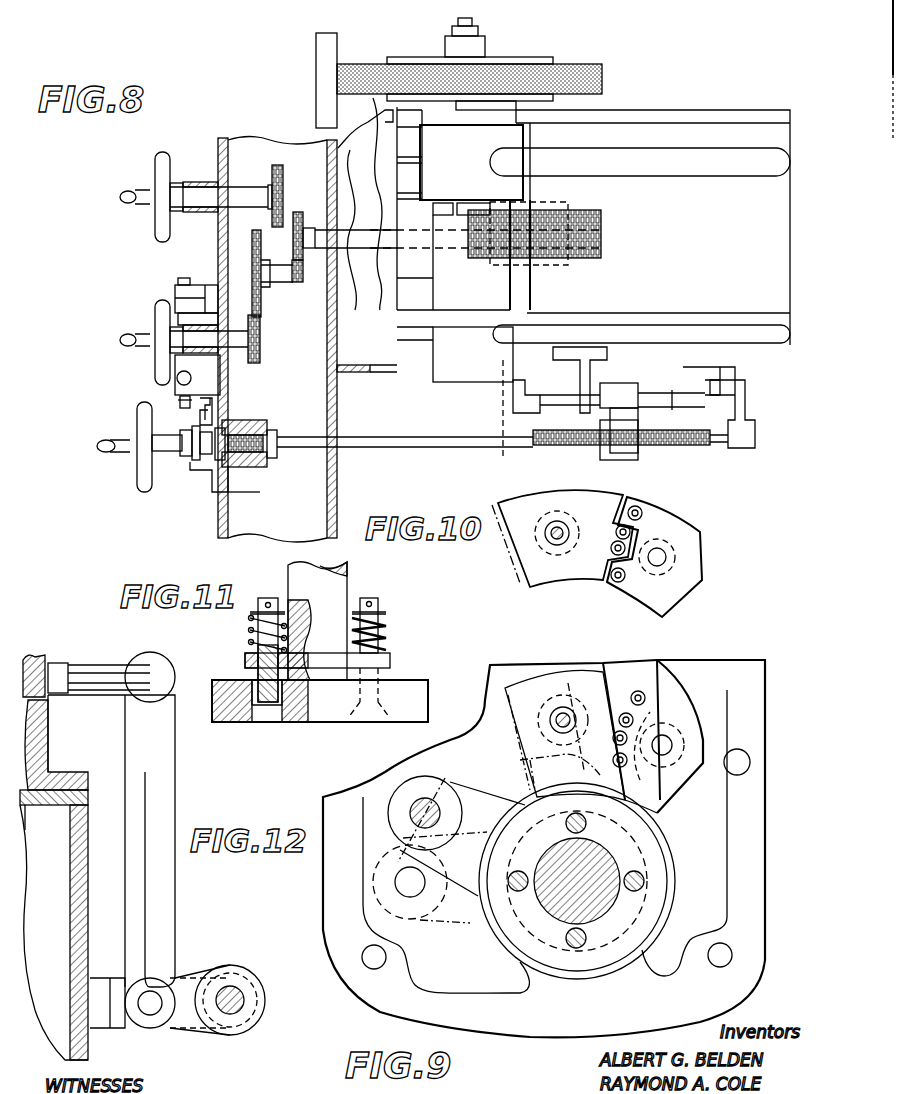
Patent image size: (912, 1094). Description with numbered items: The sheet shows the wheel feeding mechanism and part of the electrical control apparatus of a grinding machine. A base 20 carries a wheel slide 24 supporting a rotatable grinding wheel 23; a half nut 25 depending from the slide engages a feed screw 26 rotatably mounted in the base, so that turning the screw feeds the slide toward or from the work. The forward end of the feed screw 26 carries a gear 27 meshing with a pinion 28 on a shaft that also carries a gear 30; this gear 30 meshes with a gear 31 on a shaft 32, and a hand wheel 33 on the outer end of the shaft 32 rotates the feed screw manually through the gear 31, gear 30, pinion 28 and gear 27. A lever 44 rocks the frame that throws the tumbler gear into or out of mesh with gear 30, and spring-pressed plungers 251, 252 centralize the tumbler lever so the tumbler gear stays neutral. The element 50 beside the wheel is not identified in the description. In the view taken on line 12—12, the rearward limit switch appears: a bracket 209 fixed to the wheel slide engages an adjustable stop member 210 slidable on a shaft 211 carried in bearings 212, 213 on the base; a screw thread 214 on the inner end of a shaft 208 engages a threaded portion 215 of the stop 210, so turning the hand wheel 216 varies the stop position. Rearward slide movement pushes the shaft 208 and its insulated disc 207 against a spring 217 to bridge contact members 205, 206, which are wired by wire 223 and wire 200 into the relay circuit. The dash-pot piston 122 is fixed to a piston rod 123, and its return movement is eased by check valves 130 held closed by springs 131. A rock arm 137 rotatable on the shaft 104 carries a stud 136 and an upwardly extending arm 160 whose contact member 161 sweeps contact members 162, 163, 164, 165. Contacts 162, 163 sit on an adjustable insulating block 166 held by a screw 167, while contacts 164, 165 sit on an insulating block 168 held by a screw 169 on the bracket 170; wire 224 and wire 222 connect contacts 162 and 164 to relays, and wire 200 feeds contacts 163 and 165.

In FIG. 8, the section line 12 is at (496, 368).
In FIG. 8, the base 20 is at (220, 145).
In FIG. 12, the base 20 is at (85, 1055).
In FIG. 8, the grinding wheel 23 is at (360, 70).
In FIG. 8, the wheel slide 24 is at (752, 128).
In FIG. 12, the wheel slide 24 is at (42, 660).
In FIG. 8, the half nut 25 is at (568, 262).
In FIG. 8, the feed screw 26 is at (600, 240).
In FIG. 8, the gear 27 is at (300, 212).
In FIG. 8, the pinion 28 is at (298, 283).
In FIG. 8, the gear 30 is at (262, 245).
In FIG. 8, the gear 31 is at (260, 342).
In FIG. 8, the shaft 32 is at (235, 333).
In FIG. 8, the hand wheel 33 is at (162, 310).
In FIG. 8, the lever 44 is at (178, 375).
In FIG. 8, the plate 50 is at (318, 47).
In FIG. 9, the shaft 104 is at (600, 895).
In FIG. 11, the dash-pot piston 122 is at (406, 680).
In FIG. 11, the piston rod 123 is at (340, 588).
In FIG. 11, the check valves 130 is at (262, 722).
In FIG. 11, the springs 131 is at (252, 630).
In FIG. 9, the stud 136 is at (412, 820).
In FIG. 9, the rock arm 137 is at (474, 795).
In FIG. 9, the upwardly extending arm 160 is at (614, 690).
In FIG. 9, the contact member 161 is at (530, 766).
In FIG. 10, the contact member 162 is at (640, 506).
In FIG. 9, the contact member 162 is at (644, 694).
In FIG. 10, the contact member 163 is at (618, 583).
In FIG. 9, the contact member 163 is at (618, 768).
In FIG. 10, the contact member 164 is at (616, 532).
In FIG. 9, the contact member 164 is at (619, 720).
In FIG. 10, the contact member 165 is at (611, 549).
In FIG. 9, the contact member 165 is at (613, 740).
In FIG. 10, the adjustable insulating block 166 is at (650, 600).
In FIG. 9, the adjustable insulating block 166 is at (668, 785).
In FIG. 10, the screw 167 is at (660, 566).
In FIG. 9, the screw 167 is at (672, 755).
In FIG. 10, the adjustable insulating block 168 is at (520, 502).
In FIG. 9, the adjustable insulating block 168 is at (520, 718).
In FIG. 10, the screw 169 is at (562, 526).
In FIG. 9, the screw 169 is at (556, 712).
In FIG. 9, the bracket 170 is at (492, 708).
In FIG. 8, the wire 200 is at (240, 400).
In FIG. 10, the wire 200 is at (625, 548).
In FIG. 9, the wire 200 is at (627, 738).
In FIG. 8, the contact member 205 is at (202, 470).
In FIG. 8, the contact member 206 is at (206, 420).
In FIG. 8, the disc 207 is at (190, 458).
In FIG. 8, the shaft 208 is at (315, 447).
In FIG. 8, the bracket 209 is at (590, 352).
In FIG. 12, the bracket 209 is at (100, 668).
In FIG. 8, the adjustable stop member 210 is at (612, 390).
In FIG. 12, the adjustable stop member 210 is at (132, 748).
In FIG. 8, the shaft 211 is at (671, 407).
In FIG. 12, the shaft 211 is at (150, 990).
In FIG. 8, the bearing 212 is at (518, 408).
In FIG. 12, the bearing 212 is at (133, 998).
In FIG. 8, the bearing 213 is at (738, 388).
In FIG. 12, the bearing 213 is at (193, 975).
In FIG. 8, the screw thread 214 is at (560, 445).
In FIG. 12, the screw thread 214 is at (243, 992).
In FIG. 8, the threaded portion 215 is at (630, 448).
In FIG. 12, the threaded portion 215 is at (240, 972).
In FIG. 8, the hand wheel 216 is at (142, 470).
In FIG. 8, the spring 217 is at (250, 422).
In FIG. 10, the wire 222 is at (630, 532).
In FIG. 9, the wire 222 is at (633, 720).
In FIG. 8, the wire 223 is at (245, 492).
In FIG. 10, the wire 224 is at (642, 513).
In FIG. 9, the wire 224 is at (645, 698).
In FIG. 8, the spring-pressed plunger 251 is at (180, 280).
In FIG. 8, the spring-pressed plunger 252 is at (180, 402).